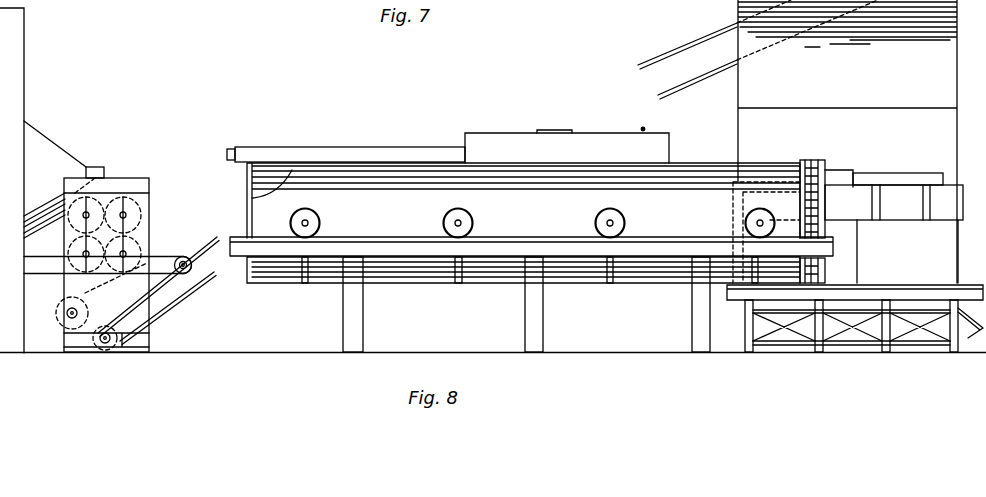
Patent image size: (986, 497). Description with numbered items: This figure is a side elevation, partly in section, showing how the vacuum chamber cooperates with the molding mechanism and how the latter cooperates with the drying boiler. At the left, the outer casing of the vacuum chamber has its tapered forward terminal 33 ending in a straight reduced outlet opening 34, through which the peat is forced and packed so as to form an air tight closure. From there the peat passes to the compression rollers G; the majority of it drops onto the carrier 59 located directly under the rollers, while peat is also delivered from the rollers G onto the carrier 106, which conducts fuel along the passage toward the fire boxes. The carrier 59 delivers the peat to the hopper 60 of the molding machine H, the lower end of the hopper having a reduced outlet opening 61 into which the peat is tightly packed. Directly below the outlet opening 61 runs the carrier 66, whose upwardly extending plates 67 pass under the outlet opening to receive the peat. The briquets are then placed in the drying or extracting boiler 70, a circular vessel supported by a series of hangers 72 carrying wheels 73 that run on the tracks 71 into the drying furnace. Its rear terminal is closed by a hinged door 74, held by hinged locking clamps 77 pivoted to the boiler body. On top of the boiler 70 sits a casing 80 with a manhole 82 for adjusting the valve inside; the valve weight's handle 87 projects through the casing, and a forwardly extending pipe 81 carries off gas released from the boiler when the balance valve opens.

The forward terminal 33 is at (37, 142).
The reduced outlet opening 34 is at (96, 167).
The compression rollers G is at (148, 185).
The carrier 106 is at (43, 273).
The carrier 59 is at (184, 244).
The forwardly extending pipe 81 is at (372, 150).
The casing or chamber 80 is at (603, 162).
The manhole 82 is at (550, 128).
The handle 87 is at (645, 129).
The drying or extracting boiler 70 is at (523, 223).
The tracks 71 is at (577, 238).
The wheels 73 is at (320, 220).
The hangers 72 is at (305, 283).
The hinged locking clamps 77 is at (818, 160).
The door 74 is at (827, 172).
The upwardly extending plates 67 is at (902, 175).
The carrier 66 is at (903, 212).
The reduced outlet opening 61 is at (905, 135).
The hopper 60 is at (847, 141).
The molding machine H is at (968, 81).